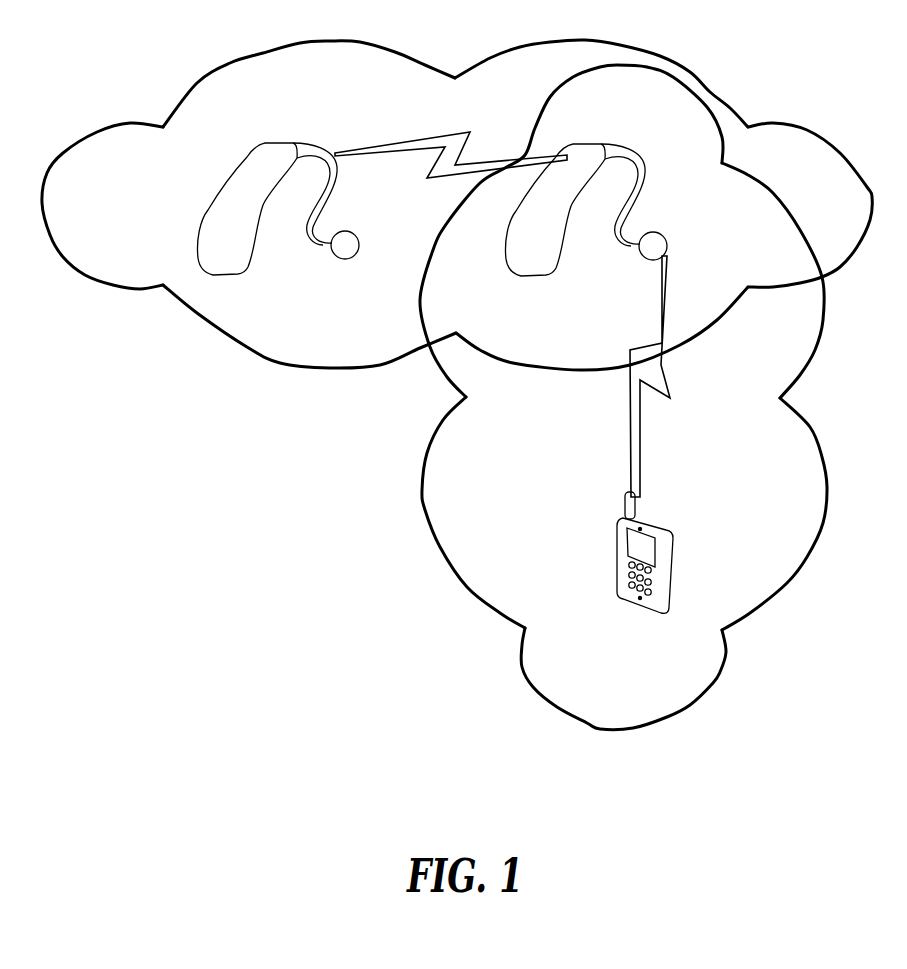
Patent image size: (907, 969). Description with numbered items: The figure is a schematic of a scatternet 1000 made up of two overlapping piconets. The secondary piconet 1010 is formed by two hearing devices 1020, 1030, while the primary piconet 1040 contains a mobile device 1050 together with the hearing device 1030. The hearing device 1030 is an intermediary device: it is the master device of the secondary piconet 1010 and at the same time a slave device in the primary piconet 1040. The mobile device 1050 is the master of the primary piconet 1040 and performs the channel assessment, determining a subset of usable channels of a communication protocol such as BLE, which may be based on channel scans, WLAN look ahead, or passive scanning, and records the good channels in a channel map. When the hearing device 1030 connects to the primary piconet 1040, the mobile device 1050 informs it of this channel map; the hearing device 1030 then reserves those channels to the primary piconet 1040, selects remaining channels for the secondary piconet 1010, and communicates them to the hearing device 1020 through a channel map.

The scatternet 1000 is at (788, 38).
The secondary piconet 1010 is at (335, 40).
The hearing device 1020 is at (265, 142).
The hearing device 1030 is at (587, 143).
The primary piconet 1040 is at (809, 427).
The mobile device 1050 is at (668, 532).